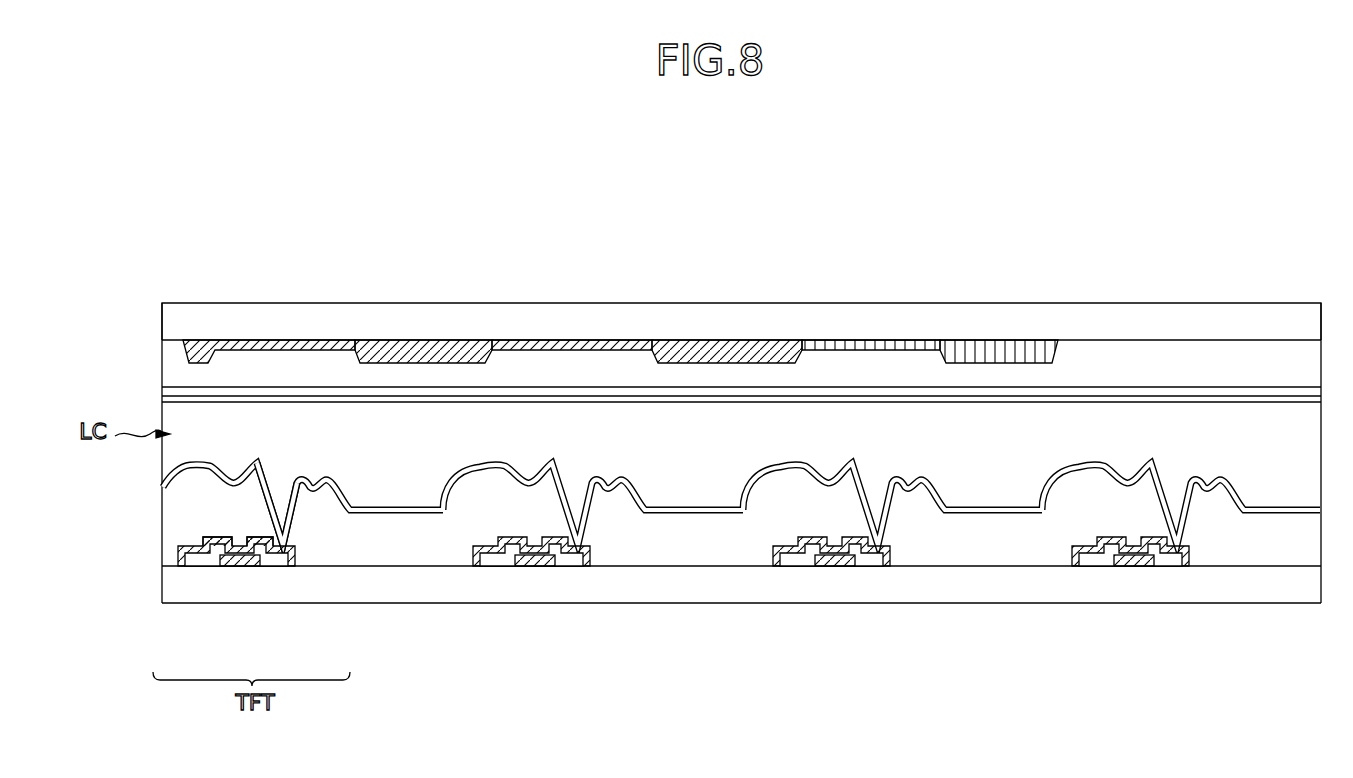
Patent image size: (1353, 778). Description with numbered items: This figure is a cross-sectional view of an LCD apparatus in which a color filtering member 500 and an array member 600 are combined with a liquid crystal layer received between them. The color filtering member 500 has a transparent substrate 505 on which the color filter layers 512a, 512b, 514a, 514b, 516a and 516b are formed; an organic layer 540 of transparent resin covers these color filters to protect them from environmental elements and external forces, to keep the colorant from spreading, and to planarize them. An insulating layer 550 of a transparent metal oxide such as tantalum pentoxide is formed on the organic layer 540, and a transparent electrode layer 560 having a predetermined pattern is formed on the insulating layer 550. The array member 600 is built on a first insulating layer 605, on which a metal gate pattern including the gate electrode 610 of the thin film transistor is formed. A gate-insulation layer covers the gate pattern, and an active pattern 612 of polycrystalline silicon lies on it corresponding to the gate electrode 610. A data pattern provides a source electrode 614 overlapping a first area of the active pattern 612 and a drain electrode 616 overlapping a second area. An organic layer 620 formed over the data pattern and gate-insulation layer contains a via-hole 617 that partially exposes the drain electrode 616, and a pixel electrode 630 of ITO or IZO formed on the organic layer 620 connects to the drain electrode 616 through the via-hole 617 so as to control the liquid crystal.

The color filtering member 500 is at (138, 324).
The transparent substrate 505 is at (1231, 322).
The organic layer 540 is at (1290, 357).
The color filter layer 512a is at (422, 340).
The color filter layer 512b is at (305, 340).
The color filter layer 514a is at (697, 340).
The color filter layer 514b is at (553, 340).
The color filter layer 516a is at (1000, 340).
The color filter layer 516b is at (886, 340).
The insulating layer 550 is at (162, 387).
The transparent electrode layer 560 is at (162, 398).
The array member 600 is at (138, 578).
The first insulating layer 605 is at (653, 592).
The gate electrode 610 is at (237, 566).
The active pattern 612 is at (205, 566).
The source electrode 614 is at (177, 566).
The drain electrode 616 is at (287, 566).
The via-hole 617 is at (286, 478).
The organic layer 620 is at (388, 566).
The pixel electrode 630 is at (440, 512).